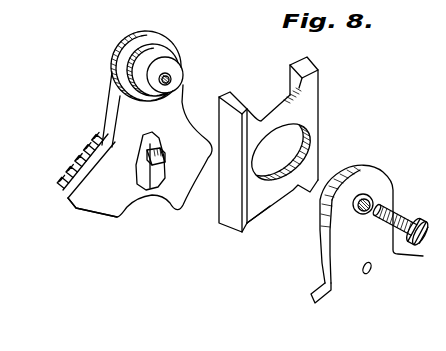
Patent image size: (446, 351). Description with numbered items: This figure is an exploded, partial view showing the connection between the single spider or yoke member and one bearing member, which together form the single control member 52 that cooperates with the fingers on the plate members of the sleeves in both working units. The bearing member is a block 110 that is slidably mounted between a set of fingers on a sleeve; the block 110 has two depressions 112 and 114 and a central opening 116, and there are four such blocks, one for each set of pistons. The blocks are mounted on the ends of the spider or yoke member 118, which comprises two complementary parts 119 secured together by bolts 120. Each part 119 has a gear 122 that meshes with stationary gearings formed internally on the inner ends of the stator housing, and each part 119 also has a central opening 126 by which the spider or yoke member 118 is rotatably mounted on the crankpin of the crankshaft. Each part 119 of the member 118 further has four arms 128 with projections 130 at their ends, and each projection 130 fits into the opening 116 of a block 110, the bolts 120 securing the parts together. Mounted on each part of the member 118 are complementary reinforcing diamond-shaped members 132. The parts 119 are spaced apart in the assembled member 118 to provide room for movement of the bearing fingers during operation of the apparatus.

The single control member 52 is at (296, 153).
The block 110 is at (325, 80).
The depression 112 is at (268, 108).
The depression 114 is at (270, 206).
The central opening 116 is at (309, 137).
The spider or yoke member 118 is at (354, 218).
The complementary part 119 is at (175, 112).
The bolt 120 is at (395, 216).
The gear 122 is at (98, 139).
The central opening 126 is at (124, 207).
The arm 128 is at (338, 255).
The projection 130 is at (170, 70).
The reinforcing diamond-shaped member 132 is at (166, 170).